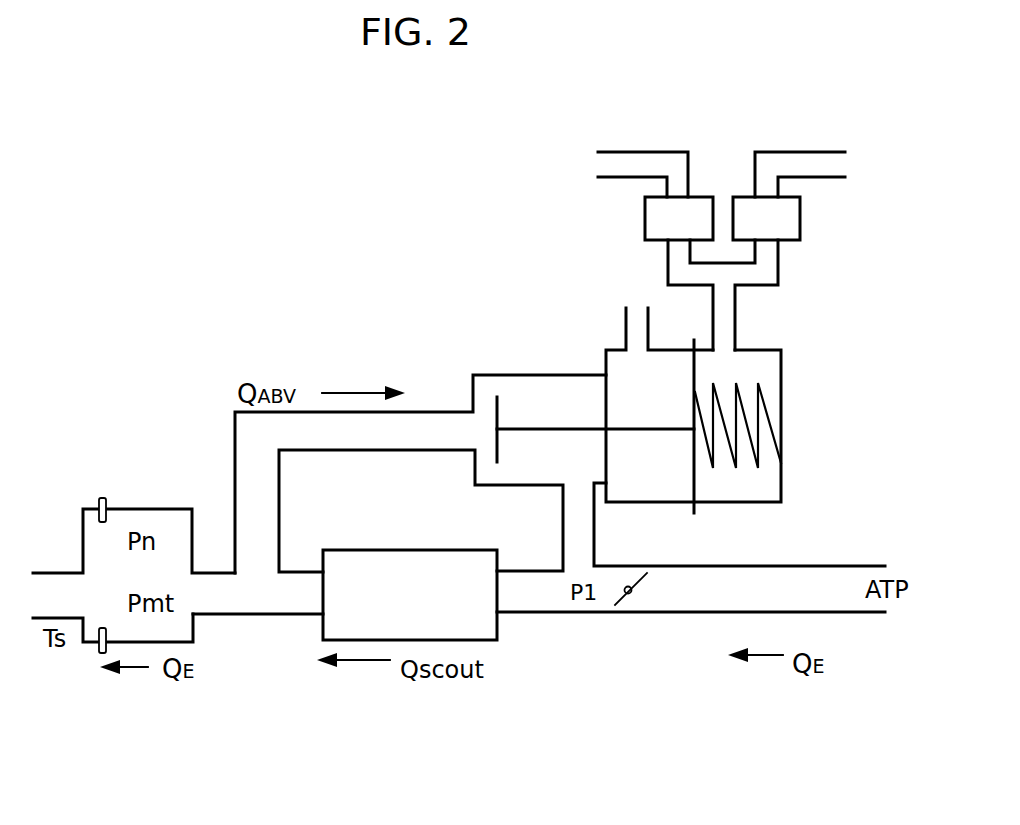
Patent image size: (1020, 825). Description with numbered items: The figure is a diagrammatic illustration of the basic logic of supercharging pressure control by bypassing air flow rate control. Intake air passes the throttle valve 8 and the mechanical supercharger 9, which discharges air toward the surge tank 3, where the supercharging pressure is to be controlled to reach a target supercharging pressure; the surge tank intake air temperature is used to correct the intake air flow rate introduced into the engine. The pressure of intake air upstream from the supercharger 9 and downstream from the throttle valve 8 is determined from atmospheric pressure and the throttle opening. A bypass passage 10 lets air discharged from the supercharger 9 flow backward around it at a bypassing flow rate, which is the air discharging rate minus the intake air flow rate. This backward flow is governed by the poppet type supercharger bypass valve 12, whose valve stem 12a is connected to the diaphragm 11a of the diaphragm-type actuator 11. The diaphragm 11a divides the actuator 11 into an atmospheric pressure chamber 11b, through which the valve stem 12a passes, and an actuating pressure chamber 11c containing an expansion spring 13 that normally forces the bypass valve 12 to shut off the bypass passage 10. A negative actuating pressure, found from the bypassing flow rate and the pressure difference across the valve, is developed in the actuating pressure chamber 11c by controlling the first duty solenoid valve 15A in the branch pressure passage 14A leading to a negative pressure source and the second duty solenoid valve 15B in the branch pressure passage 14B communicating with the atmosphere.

The surge tank 3 is at (83, 508).
The throttle valve 8 is at (628, 595).
The mechanical supercharger 9 is at (497, 628).
The bypass passage 10 is at (235, 470).
The diaphragm-type actuator 11 is at (781, 380).
The diaphragm 11a is at (696, 480).
The atmospheric pressure chamber 11b is at (638, 480).
The actuating pressure chamber 11c is at (757, 483).
The supercharger bypass valve 12 is at (495, 408).
The valve stem 12a is at (548, 428).
The expansion spring 13 is at (768, 420).
The branch pressure passage 14A is at (822, 147).
The branch pressure passage 14B is at (631, 152).
The first duty solenoid valve 15A is at (800, 218).
The second duty solenoid valve 15B is at (645, 212).